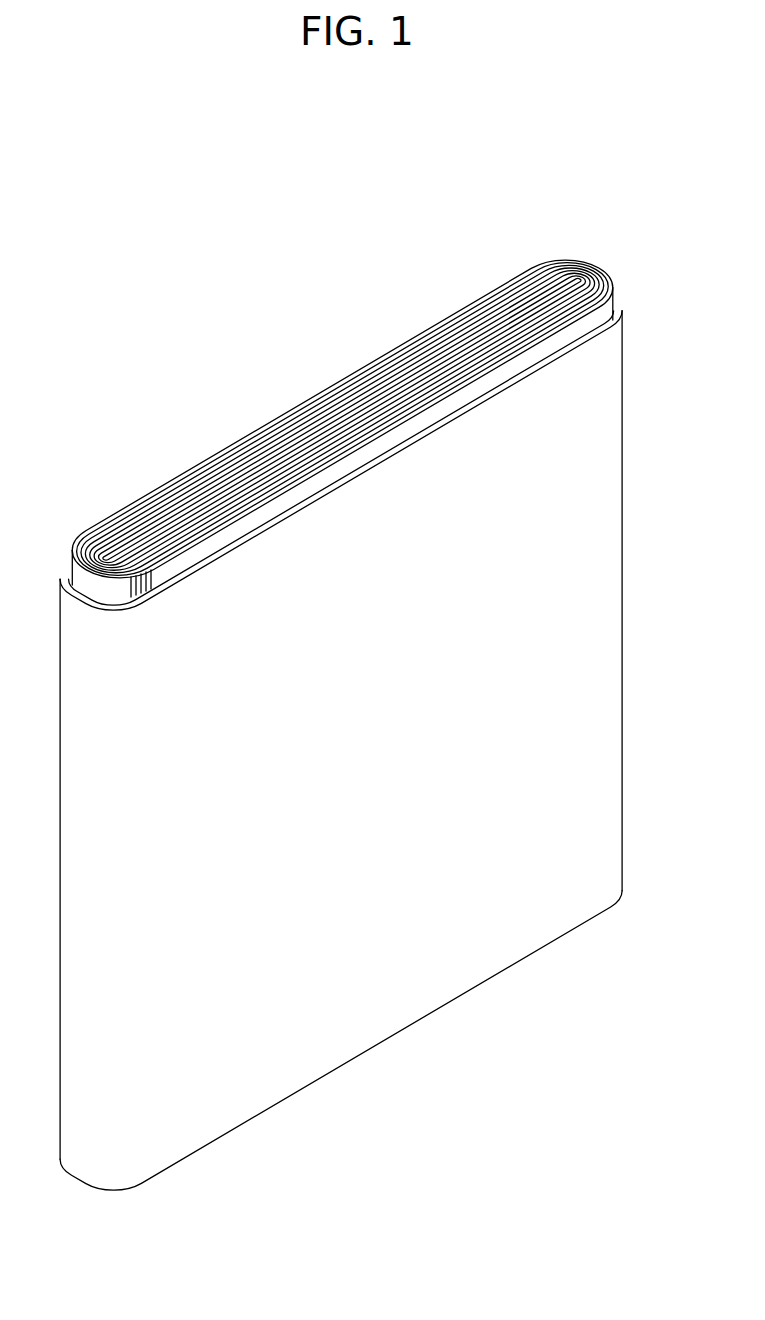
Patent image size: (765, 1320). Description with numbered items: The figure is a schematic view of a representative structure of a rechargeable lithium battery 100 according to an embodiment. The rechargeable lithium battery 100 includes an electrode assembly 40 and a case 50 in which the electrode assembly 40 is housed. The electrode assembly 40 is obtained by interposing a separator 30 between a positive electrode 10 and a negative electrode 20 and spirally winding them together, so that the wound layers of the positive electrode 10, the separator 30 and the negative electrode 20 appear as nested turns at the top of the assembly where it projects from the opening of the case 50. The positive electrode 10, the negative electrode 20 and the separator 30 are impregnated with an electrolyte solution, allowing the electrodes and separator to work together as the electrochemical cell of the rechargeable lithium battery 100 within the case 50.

The rechargeable lithium battery 100 is at (323, 137).
The positive electrode 10 is at (613, 286).
The negative electrode 20 is at (576, 276).
The separator 30 is at (597, 277).
The electrode assembly 40 is at (315, 368).
The case 50 is at (604, 590).